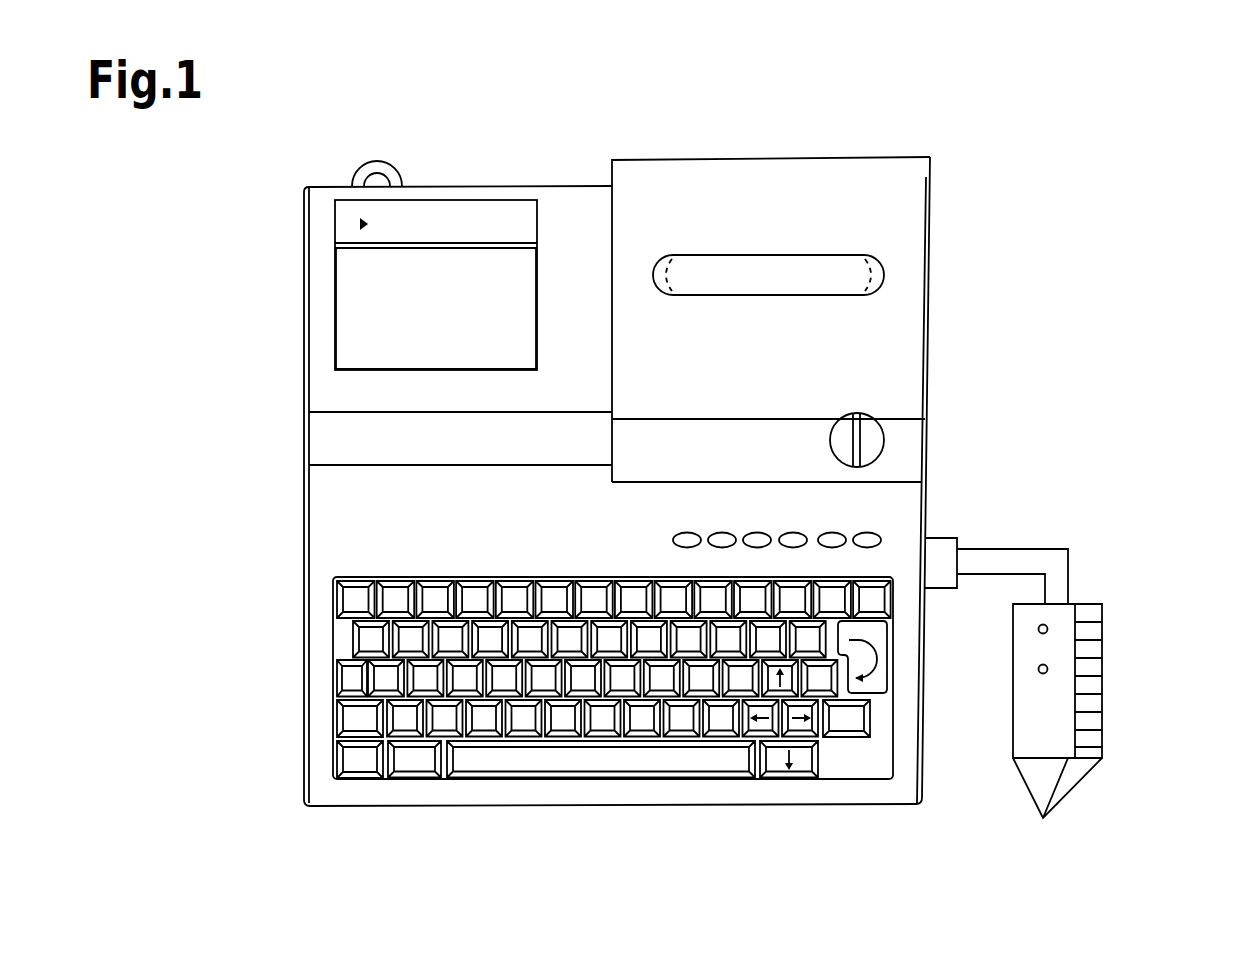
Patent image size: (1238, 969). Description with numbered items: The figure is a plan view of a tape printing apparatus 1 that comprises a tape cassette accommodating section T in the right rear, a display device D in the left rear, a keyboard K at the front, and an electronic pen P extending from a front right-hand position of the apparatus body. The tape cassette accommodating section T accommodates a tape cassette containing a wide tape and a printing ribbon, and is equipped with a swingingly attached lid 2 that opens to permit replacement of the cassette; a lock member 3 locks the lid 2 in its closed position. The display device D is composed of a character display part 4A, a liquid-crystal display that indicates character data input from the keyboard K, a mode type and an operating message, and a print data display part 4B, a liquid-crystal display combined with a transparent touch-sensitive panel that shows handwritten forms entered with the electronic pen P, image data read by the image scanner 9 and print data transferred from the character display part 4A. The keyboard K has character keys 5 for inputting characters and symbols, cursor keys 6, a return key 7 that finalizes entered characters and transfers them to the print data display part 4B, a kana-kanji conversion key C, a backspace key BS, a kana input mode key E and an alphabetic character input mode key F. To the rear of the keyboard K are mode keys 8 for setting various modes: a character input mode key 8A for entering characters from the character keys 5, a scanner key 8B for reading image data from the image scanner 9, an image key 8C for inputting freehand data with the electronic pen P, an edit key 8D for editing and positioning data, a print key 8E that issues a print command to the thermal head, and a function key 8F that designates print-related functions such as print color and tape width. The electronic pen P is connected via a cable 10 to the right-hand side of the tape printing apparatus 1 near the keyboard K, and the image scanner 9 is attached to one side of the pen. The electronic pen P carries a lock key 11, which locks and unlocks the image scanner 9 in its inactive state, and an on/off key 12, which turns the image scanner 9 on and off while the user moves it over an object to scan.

The tape printing apparatus 1 is at (933, 282).
The lid 2 is at (913, 207).
The lock member 3 is at (873, 440).
The character display part 4A is at (353, 223).
The print data display part 4B is at (350, 300).
The character keys 5 is at (400, 720).
The cursor keys 6 is at (830, 752).
The return key 7 is at (857, 679).
The mode keys 8 is at (800, 551).
The character input mode key 8A is at (672, 540).
The scanner key 8B is at (712, 530).
The image key 8C is at (754, 531).
The edit key 8D is at (792, 531).
The print key 8E is at (832, 531).
The function key 8F is at (870, 531).
The image scanner 9 is at (1097, 668).
The cable 10 is at (1045, 555).
The lock key 11 is at (1048, 627).
The on/off key 12 is at (1048, 674).
The backspace key BS is at (857, 730).
The kana-kanji conversion key C is at (418, 760).
The display device D is at (458, 197).
The kana input mode key E is at (350, 600).
The alphabetic character input mode key F is at (395, 600).
The keyboard K is at (466, 786).
The electronic pen P is at (1110, 625).
The tape cassette accommodating section T is at (697, 190).